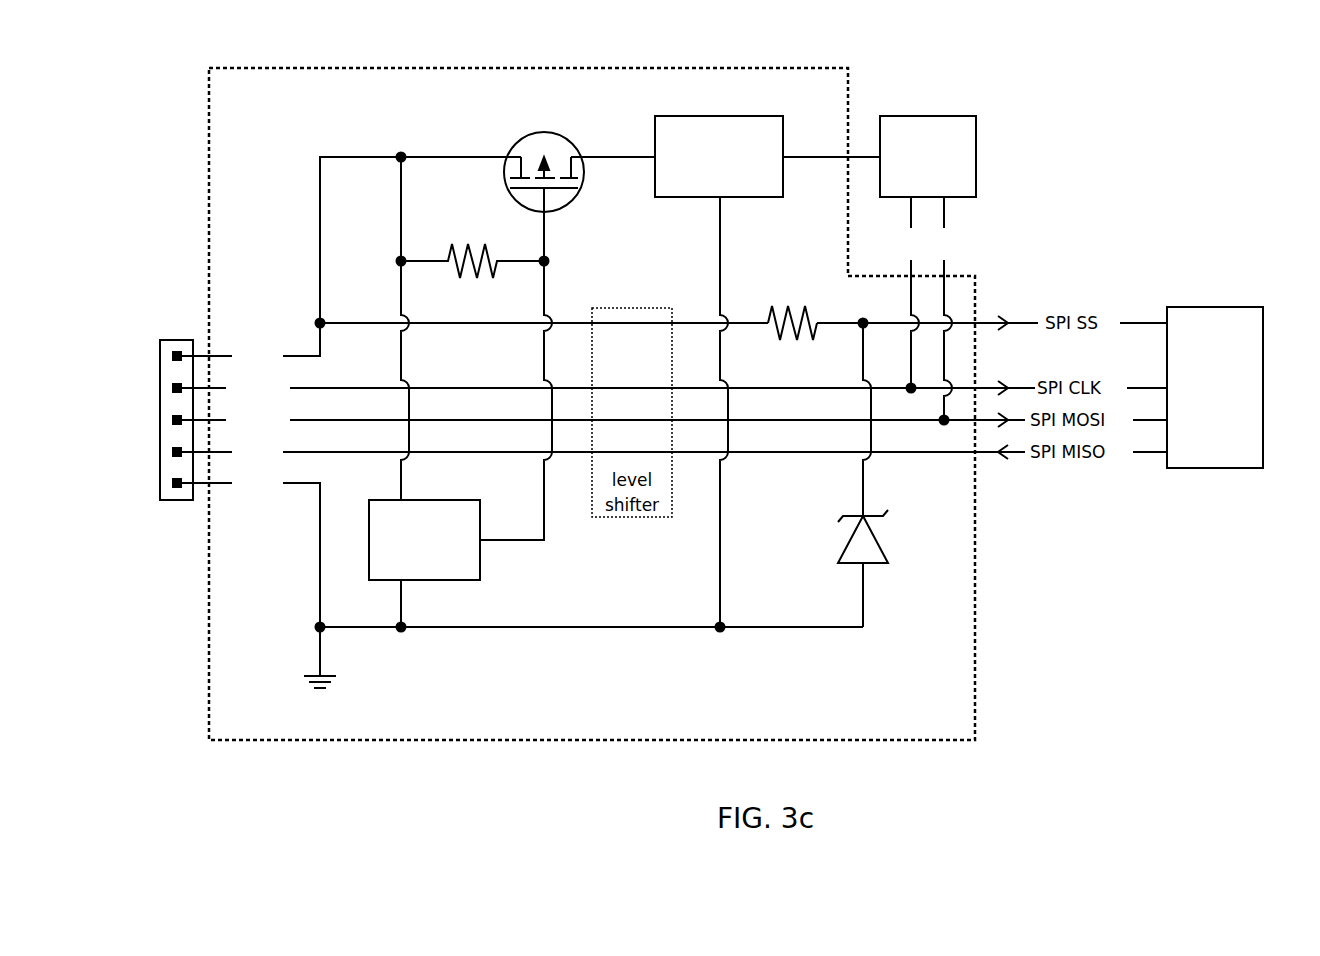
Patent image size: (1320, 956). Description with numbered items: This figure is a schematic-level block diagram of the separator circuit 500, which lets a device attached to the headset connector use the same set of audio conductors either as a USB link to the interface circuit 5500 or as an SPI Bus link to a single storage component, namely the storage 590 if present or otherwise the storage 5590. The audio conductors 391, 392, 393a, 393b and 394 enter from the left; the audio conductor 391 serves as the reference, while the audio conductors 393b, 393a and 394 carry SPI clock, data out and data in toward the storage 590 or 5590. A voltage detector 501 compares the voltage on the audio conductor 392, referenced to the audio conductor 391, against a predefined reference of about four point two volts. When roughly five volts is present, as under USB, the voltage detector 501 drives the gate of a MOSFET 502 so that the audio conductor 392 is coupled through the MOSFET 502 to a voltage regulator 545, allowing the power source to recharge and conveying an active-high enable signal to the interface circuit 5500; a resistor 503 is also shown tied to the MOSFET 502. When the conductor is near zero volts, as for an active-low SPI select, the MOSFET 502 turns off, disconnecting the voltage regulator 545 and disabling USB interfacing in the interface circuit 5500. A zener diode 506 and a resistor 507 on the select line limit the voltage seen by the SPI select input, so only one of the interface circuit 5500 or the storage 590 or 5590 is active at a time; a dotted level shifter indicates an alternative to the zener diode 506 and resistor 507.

The separator circuit 500 is at (609, 722).
The audio conductor 392 is at (347, 261).
The audio conductor 393b is at (670, 388).
The audio conductor 393a is at (670, 420).
The audio conductor 394 is at (670, 452).
The audio conductor 391 is at (254, 580).
The MOSFET 502 is at (567, 204).
The resistor 503 is at (485, 244).
The voltage regulator 545 is at (703, 191).
The interface circuit 5500 is at (906, 191).
The resistor 507 is at (770, 313).
The zener diode 506 is at (880, 548).
The voltage detector 501 is at (408, 574).
The storage 590 is at (1215, 387).
The storage 5590 is at (1193, 449).